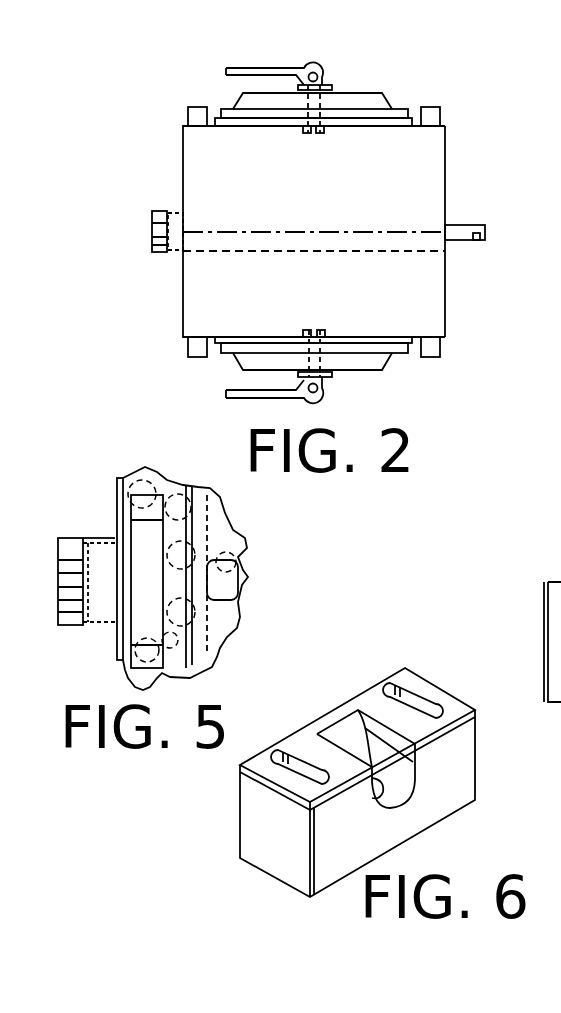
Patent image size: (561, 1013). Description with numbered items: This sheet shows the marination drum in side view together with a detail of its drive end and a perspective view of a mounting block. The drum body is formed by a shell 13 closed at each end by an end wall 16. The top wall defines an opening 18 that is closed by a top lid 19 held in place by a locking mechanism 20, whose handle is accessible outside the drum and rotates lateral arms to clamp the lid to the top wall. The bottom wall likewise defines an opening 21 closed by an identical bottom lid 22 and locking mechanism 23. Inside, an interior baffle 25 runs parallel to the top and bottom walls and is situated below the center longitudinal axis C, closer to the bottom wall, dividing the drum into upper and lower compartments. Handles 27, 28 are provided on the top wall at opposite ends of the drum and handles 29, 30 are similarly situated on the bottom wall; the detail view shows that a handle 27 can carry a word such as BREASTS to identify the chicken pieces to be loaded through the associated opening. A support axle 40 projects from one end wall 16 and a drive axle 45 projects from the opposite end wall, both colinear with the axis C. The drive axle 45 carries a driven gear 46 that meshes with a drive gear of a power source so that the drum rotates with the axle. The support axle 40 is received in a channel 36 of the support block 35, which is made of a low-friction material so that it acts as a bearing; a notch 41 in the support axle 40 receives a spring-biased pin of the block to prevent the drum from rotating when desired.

In FIG. 2, the shell 13 is at (207, 155).
In FIG. 2, the end wall 16 is at (445, 210).
In FIG. 5, the end wall 16 is at (115, 638).
In FIG. 2, the opening 18 is at (221, 110).
In FIG. 2, the top lid 19 is at (382, 93).
In FIG. 2, the locking mechanism 20 is at (327, 80).
In FIG. 2, the opening 21 is at (212, 353).
In FIG. 2, the bottom lid 22 is at (407, 353).
In FIG. 2, the locking mechanism 23 is at (305, 397).
In FIG. 2, the interior baffle 25 is at (305, 252).
In FIG. 2, the handle 27 is at (188, 113).
In FIG. 5, the handle 27 is at (165, 665).
In FIG. 2, the handle 28 is at (442, 112).
In FIG. 2, the handle 29 is at (192, 352).
In FIG. 2, the handle 30 is at (442, 345).
In FIG. 2, the support axle 40 is at (485, 232).
In FIG. 2, the notch 41 is at (477, 240).
In FIG. 2, the drive axle 45 is at (175, 255).
In FIG. 5, the drive axle 45 is at (102, 573).
In FIG. 5, the driven gear 46 is at (73, 628).
In FIG. 2, the center longitudinal axis C is at (355, 229).
In FIG. 6, the support block 35 is at (352, 840).
In FIG. 6, the channel 36 is at (398, 786).